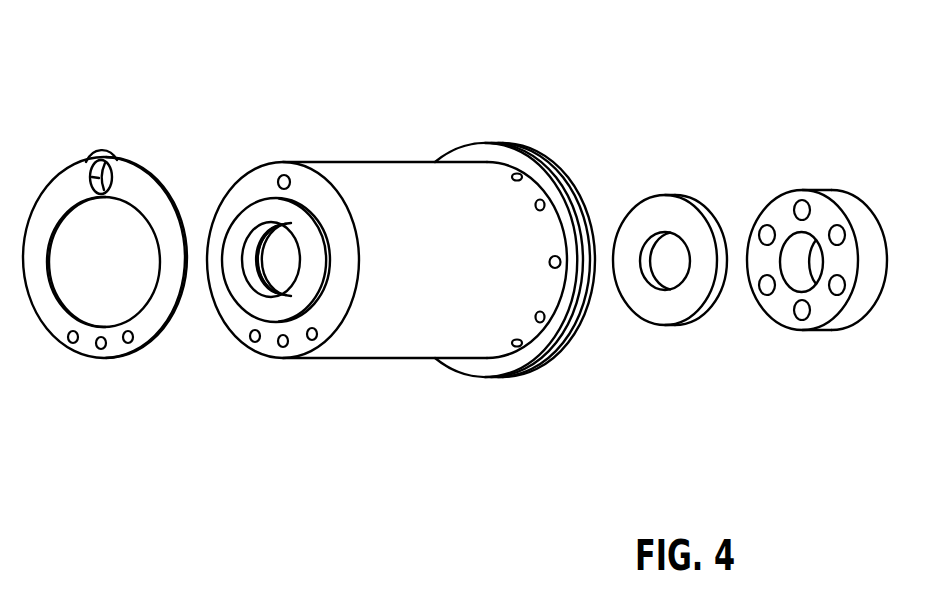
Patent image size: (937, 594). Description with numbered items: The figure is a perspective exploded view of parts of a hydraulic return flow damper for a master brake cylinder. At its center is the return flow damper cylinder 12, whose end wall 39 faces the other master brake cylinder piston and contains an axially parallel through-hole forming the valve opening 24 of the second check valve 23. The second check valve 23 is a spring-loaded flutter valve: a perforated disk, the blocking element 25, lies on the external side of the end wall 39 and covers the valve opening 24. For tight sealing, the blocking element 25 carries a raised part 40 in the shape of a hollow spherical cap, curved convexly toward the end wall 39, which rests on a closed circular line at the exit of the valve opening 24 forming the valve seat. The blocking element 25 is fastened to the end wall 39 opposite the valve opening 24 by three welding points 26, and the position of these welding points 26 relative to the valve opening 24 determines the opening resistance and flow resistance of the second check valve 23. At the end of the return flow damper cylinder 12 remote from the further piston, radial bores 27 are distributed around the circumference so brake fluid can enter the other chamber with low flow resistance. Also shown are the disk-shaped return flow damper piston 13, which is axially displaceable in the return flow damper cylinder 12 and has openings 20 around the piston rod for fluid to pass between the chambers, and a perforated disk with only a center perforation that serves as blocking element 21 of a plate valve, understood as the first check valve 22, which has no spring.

The return flow damper cylinder 12 is at (398, 330).
The return flow damper piston 13 is at (858, 212).
The openings 20 is at (766, 225).
The blocking element 21 is at (658, 207).
The first check valve 22 is at (750, 213).
The second check valve 23 is at (169, 156).
The valve opening 24 is at (282, 174).
The blocking element 25 is at (58, 197).
The welding points 26 is at (73, 343).
The radial bores 27 is at (542, 200).
The end wall 39 is at (328, 200).
The raised part 40 is at (112, 170).